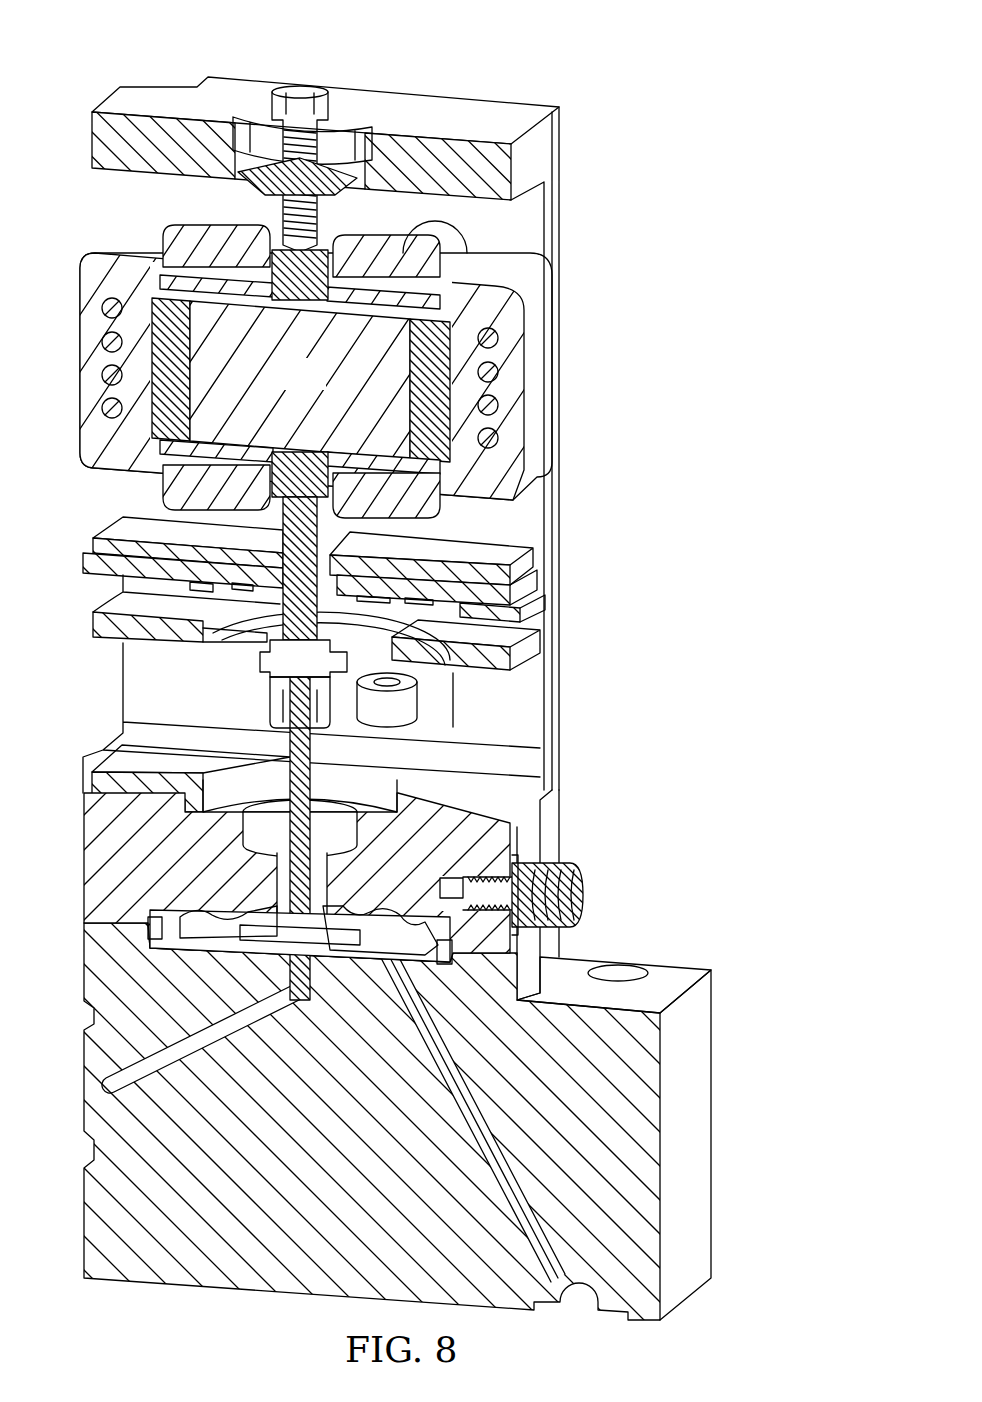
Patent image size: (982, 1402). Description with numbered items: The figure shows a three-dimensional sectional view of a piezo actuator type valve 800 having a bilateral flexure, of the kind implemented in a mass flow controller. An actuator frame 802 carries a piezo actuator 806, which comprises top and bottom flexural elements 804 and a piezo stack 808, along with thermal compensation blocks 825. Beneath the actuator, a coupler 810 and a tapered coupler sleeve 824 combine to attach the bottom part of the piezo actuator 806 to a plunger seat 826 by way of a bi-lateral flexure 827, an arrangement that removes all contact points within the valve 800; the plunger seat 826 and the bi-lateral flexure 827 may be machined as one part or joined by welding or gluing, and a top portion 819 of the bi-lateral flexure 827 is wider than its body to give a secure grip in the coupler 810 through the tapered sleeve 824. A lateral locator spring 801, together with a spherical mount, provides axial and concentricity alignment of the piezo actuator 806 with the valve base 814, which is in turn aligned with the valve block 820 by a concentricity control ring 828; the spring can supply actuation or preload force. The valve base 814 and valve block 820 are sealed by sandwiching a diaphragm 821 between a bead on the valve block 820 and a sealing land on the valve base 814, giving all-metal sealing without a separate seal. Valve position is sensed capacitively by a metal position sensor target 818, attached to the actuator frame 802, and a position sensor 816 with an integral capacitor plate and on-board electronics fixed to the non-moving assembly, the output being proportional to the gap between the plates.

The valve 800 is at (89, 80).
The lateral locator spring 801 is at (455, 655).
The actuator frame 802 is at (552, 142).
The top and bottom flexural elements 804 is at (405, 248).
The piezo actuator 806 is at (491, 575).
The piezo stack 808 is at (322, 388).
The coupler 810 is at (283, 530).
The valve base 814 is at (532, 838).
The position sensor 816 is at (540, 578).
The position sensor target 818 is at (520, 547).
The top portion 819 is at (270, 664).
The valve block 820 is at (705, 1113).
The diaphragm 821 is at (362, 960).
The coupler sleeve 824 is at (272, 697).
The thermal compensation blocks 825 is at (160, 388).
The plunger seat 826 is at (243, 947).
The bi-lateral flexure 827 is at (315, 742).
The concentricity control ring 828 is at (148, 935).